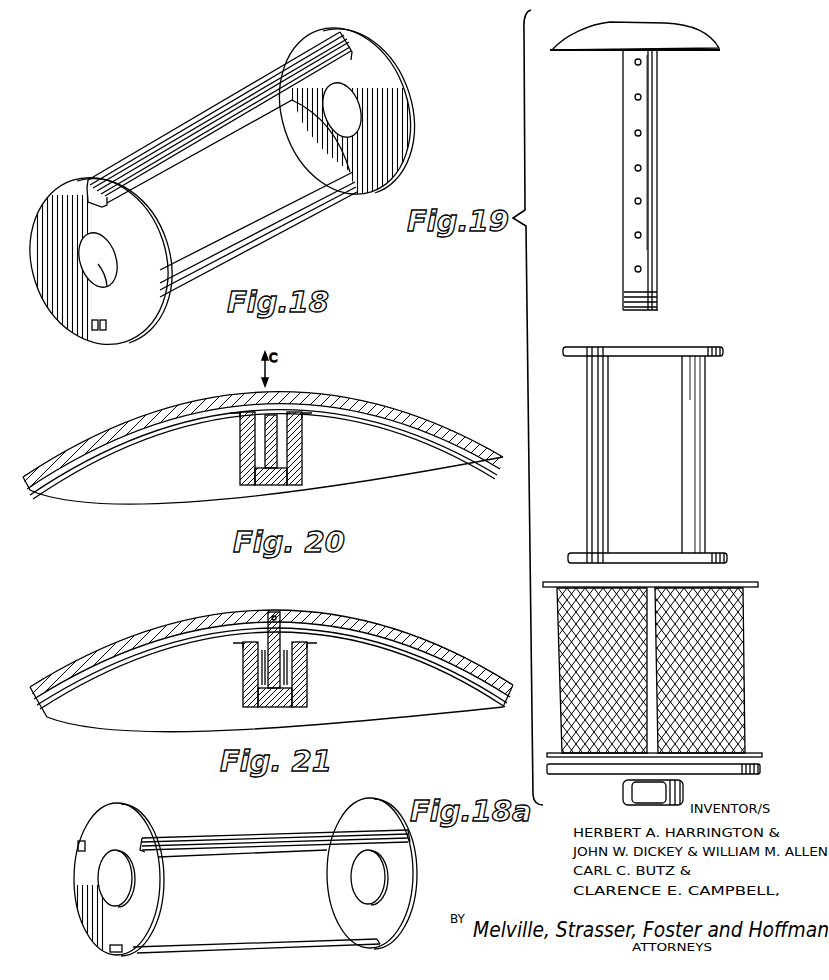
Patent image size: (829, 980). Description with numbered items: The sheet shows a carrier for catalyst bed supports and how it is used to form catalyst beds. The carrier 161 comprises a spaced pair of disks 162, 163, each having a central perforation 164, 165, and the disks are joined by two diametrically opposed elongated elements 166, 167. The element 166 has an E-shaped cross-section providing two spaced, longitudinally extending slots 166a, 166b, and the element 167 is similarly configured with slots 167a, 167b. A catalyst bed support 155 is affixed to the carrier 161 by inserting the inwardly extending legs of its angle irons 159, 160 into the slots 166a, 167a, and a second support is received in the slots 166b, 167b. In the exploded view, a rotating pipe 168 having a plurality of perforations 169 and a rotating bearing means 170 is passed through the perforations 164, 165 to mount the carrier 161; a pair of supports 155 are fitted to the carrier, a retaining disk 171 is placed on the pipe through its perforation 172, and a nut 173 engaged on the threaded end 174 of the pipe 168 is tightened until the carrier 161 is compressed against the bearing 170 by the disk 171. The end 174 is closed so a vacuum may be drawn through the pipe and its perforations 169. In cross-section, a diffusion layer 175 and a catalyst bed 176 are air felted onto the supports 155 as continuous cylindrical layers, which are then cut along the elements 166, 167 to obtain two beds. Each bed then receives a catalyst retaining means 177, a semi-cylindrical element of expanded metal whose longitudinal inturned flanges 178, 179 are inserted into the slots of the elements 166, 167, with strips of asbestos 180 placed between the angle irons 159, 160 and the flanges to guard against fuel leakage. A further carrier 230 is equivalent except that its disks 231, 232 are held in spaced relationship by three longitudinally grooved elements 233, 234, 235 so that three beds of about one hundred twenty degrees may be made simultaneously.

In FIG. 20, the catalyst bed support 155 is at (102, 455).
In FIG. 21, the catalyst bed support 155 is at (102, 678).
In FIG. 19, the catalyst bed support 155 is at (745, 668).
In FIG. 20, the angle iron 159 is at (313, 423).
In FIG. 21, the angle iron 159 is at (313, 643).
In FIG. 20, the angle iron 160 is at (227, 420).
In FIG. 21, the angle iron 160 is at (220, 643).
In FIG. 18, the carrier 161 is at (219, 119).
In FIG. 20, the carrier 161 is at (205, 494).
In FIG. 19, the carrier 161 is at (631, 455).
In FIG. 18, the disk 162 is at (143, 238).
In FIG. 18, the disk 163 is at (397, 92).
In FIG. 18, the central perforation 164 is at (107, 242).
In FIG. 19, the central perforation 164 is at (645, 357).
In FIG. 18, the central perforation 165 is at (350, 90).
In FIG. 19, the central perforation 165 is at (643, 552).
In FIG. 18, the elongated element 166 is at (219, 119).
In FIG. 20, the elongated element 166 is at (277, 471).
In FIG. 21, the elongated element 166 is at (273, 691).
In FIG. 18, the slot 166a is at (198, 120).
In FIG. 20, the slot 166a is at (262, 462).
In FIG. 21, the slot 166a is at (250, 703).
In FIG. 18, the slot 166b is at (231, 112).
In FIG. 20, the slot 166b is at (280, 467).
In FIG. 21, the slot 166b is at (288, 692).
In FIG. 18, the elongated element 167 is at (240, 227).
In FIG. 18, the slot 167a is at (95, 331).
In FIG. 18, the slot 167b is at (106, 332).
In FIG. 19, the rotating pipe 168 is at (652, 190).
In FIG. 19, the perforations 169 is at (635, 133).
In FIG. 19, the rotating bearing means 170 is at (678, 45).
In FIG. 19, the retaining disk 171 is at (762, 769).
In FIG. 19, the retaining disk perforation 172 is at (622, 786).
In FIG. 19, the nut 173 is at (685, 790).
In FIG. 19, the threaded end 174 is at (650, 300).
In FIG. 20, the diffusion layer 175 is at (397, 415).
In FIG. 21, the diffusion layer 175 is at (442, 647).
In FIG. 20, the catalyst bed 176 is at (428, 418).
In FIG. 21, the catalyst bed 176 is at (500, 648).
In FIG. 21, the catalyst retaining means 177 is at (172, 618).
In FIG. 21, the inturned flange 178 is at (270, 610).
In FIG. 21, the inturned flange 179 is at (277, 612).
In FIG. 21, the asbestos strip 180 is at (258, 660).
In FIG. 18A, the carrier 230 is at (255, 856).
In FIG. 18A, the end disc 231 is at (162, 887).
In FIG. 18A, the disk 232 is at (413, 897).
In FIG. 18A, the longitudinally grooved element 233 is at (185, 836).
In FIG. 18A, the longitudinally grooved element 234 is at (83, 840).
In FIG. 18A, the longitudinally grooved element 235 is at (262, 946).